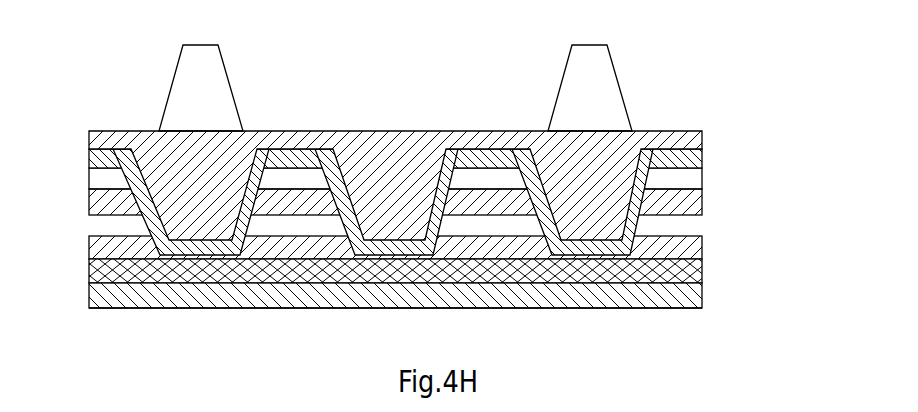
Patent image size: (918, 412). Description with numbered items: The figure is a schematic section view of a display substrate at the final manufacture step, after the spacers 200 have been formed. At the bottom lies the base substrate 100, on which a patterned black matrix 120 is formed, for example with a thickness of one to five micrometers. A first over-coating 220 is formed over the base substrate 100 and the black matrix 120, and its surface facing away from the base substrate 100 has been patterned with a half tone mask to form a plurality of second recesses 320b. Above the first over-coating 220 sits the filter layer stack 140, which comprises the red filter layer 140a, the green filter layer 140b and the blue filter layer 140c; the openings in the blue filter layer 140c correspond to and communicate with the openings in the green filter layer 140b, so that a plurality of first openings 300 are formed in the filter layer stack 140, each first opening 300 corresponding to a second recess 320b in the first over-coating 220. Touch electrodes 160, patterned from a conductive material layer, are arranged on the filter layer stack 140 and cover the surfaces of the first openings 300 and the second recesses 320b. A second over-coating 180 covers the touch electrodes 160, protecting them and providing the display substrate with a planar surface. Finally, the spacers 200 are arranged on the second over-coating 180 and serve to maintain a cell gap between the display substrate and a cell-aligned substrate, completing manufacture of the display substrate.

The base substrate 100 is at (690, 308).
The black matrix 120 is at (685, 282).
The first over-coating 220 is at (685, 252).
The filter layer stack 140 is at (288, 178).
The red filter layer 140a is at (685, 225).
The green filter layer 140b is at (685, 198).
The blue filter layer 140c is at (685, 178).
The touch electrodes 160 is at (685, 165).
The second over-coating 180 is at (690, 135).
The spacers 200 is at (210, 112).
The first openings 300 is at (596, 187).
The second recesses 320b is at (360, 240).